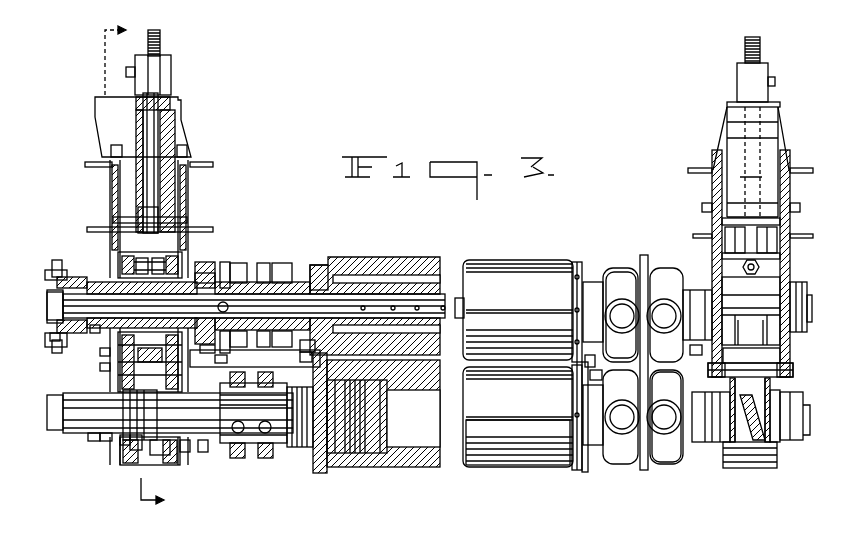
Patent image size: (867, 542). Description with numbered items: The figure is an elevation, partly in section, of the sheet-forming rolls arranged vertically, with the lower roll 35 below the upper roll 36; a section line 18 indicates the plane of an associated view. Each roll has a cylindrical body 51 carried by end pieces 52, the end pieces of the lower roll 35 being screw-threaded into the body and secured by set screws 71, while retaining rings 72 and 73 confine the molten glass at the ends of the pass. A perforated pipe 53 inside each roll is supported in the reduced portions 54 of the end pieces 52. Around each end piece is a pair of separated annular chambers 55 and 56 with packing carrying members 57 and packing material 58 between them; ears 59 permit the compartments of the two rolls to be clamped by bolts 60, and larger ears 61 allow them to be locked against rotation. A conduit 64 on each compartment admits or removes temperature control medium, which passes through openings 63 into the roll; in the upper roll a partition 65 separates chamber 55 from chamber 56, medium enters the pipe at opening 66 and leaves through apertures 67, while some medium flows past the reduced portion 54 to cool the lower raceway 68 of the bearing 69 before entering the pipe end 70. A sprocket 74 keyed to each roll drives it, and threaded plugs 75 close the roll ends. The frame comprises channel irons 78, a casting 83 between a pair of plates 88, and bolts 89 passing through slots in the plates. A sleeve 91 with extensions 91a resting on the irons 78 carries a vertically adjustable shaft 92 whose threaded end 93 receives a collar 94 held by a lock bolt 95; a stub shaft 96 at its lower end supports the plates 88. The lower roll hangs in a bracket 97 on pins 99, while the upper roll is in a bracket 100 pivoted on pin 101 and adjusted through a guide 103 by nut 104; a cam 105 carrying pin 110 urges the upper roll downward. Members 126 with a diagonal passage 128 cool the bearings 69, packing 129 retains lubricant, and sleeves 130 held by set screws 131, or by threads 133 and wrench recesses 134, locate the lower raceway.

The section line 18 is at (131, 264).
The lower roll 35 is at (497, 470).
The upper roll 36 is at (550, 258).
The cylindrical body 51 is at (520, 262).
The end piece 52 is at (340, 265).
The perforated pipe 53 is at (295, 300).
The reduced portion 54 is at (206, 268).
The annular chamber 55 is at (452, 361).
The annular chamber 56 is at (449, 363).
The packing carrying member 57 is at (203, 452).
The packing material 58 is at (232, 262).
The ear 59 is at (620, 298).
The bolt 60 is at (662, 298).
The ear 61 is at (602, 378).
The opening 63 is at (257, 264).
The conduit 64 is at (622, 310).
The partition 65 is at (285, 263).
The opening 66 is at (206, 352).
The aperture 67 is at (458, 298).
The lower raceway 68 is at (105, 288).
The bearing 69 is at (190, 262).
The end of conduit 70 is at (96, 328).
The set screw 71 is at (302, 350).
The retaining ring 72 is at (320, 264).
The retaining ring 73 is at (327, 470).
The sprocket 74 is at (56, 338).
The screw-threaded plug 75 is at (55, 287).
The channel iron 78 is at (200, 163).
The casting 83 is at (100, 107).
The plate 88 is at (203, 185).
The bolt 89 is at (701, 206).
The sleeve 91 is at (162, 130).
The extension 91a is at (196, 137).
The vertically adjustable shaft 92 is at (135, 122).
The threaded end 93 is at (156, 32).
The threaded collar 94 is at (166, 74).
The lock bolt 95 is at (125, 72).
The stub shaft 96 is at (184, 203).
The hanging bracket 97 is at (135, 448).
The pin 99 is at (104, 352).
The bracket 100 is at (150, 251).
The pin 101 is at (792, 362).
The guide 103 is at (780, 262).
The adjusting nut 104 is at (743, 268).
The cam 105 is at (726, 240).
The pin 110 is at (777, 233).
The member 126 is at (750, 472).
The diagonal passage 128 is at (738, 448).
The packing 129 is at (125, 442).
The sleeve 130 is at (107, 437).
The set screw 131 is at (92, 437).
The screw threads 133 is at (142, 407).
The recess 134 is at (108, 377).